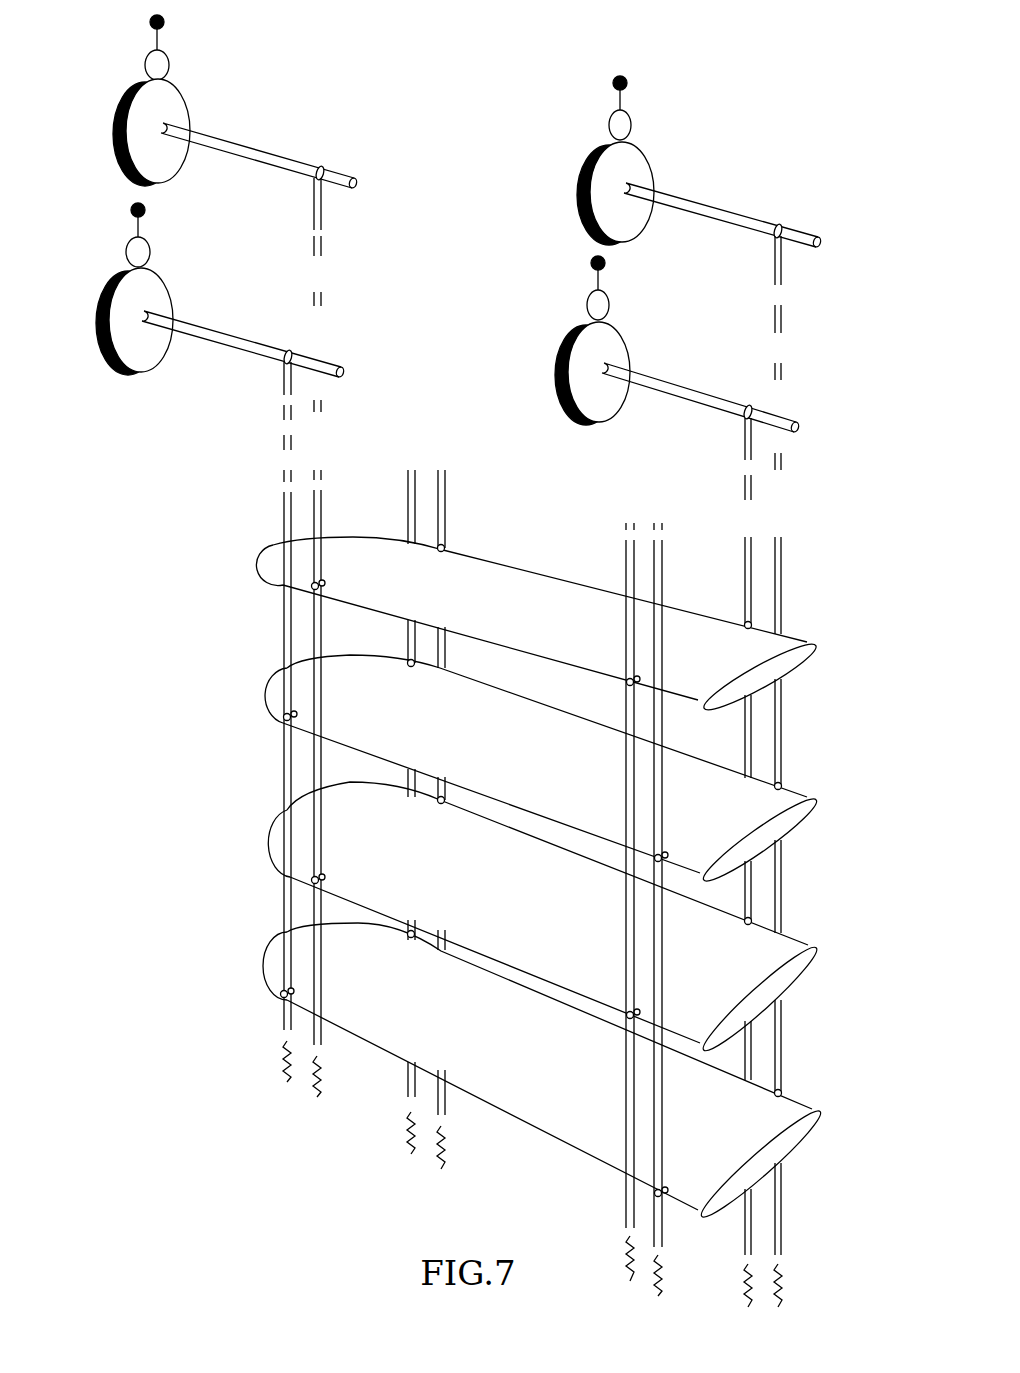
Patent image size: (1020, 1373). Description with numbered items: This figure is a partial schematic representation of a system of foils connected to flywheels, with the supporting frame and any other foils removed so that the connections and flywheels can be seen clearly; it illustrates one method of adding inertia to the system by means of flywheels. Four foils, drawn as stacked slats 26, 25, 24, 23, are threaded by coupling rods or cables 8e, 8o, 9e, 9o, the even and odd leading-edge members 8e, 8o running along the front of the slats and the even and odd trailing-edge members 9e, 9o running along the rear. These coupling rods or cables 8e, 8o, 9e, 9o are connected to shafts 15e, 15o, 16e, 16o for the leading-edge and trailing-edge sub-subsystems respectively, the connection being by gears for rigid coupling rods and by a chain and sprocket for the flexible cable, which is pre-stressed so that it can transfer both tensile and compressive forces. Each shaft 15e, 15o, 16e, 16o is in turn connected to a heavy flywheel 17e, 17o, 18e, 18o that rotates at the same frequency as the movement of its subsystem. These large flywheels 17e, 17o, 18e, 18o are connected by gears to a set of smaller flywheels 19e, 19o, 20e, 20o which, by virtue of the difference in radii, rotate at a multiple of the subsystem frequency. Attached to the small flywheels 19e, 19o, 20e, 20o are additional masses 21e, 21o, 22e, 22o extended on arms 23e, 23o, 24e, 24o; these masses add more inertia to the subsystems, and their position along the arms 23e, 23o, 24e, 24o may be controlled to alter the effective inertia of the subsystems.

The additional mass 21e is at (138, 16).
The arm 23e is at (163, 37).
The small flywheel 19e is at (136, 65).
The heavy flywheel 17e is at (158, 166).
The shaft 15e is at (316, 166).
The additional mass 21o is at (115, 211).
The arm 23o is at (146, 226).
The small flywheel 19o is at (116, 252).
The heavy flywheel 17o is at (137, 355).
The shaft 15o is at (287, 350).
The additional mass 22o is at (609, 83).
The arm 24o is at (627, 100).
The small flywheel 20o is at (598, 125).
The heavy flywheel 18o is at (622, 229).
The shaft 16o is at (774, 222).
The additional mass 22e is at (576, 265).
The arm 24e is at (605, 286).
The small flywheel 20e is at (576, 305).
The heavy flywheel 18e is at (598, 415).
The shaft 16e is at (747, 402).
The coupling rod or cable 8o is at (469, 829).
The coupling rod or cable 8e is at (476, 729).
The coupling rod or cable 9o is at (593, 771).
The coupling rod or cable 9e is at (594, 862).
The slat 2_6 26 is at (794, 657).
The slat 2_5 25 is at (789, 818).
The slat 2_4 24 is at (793, 967).
The slat 2_3 23 is at (793, 1143).